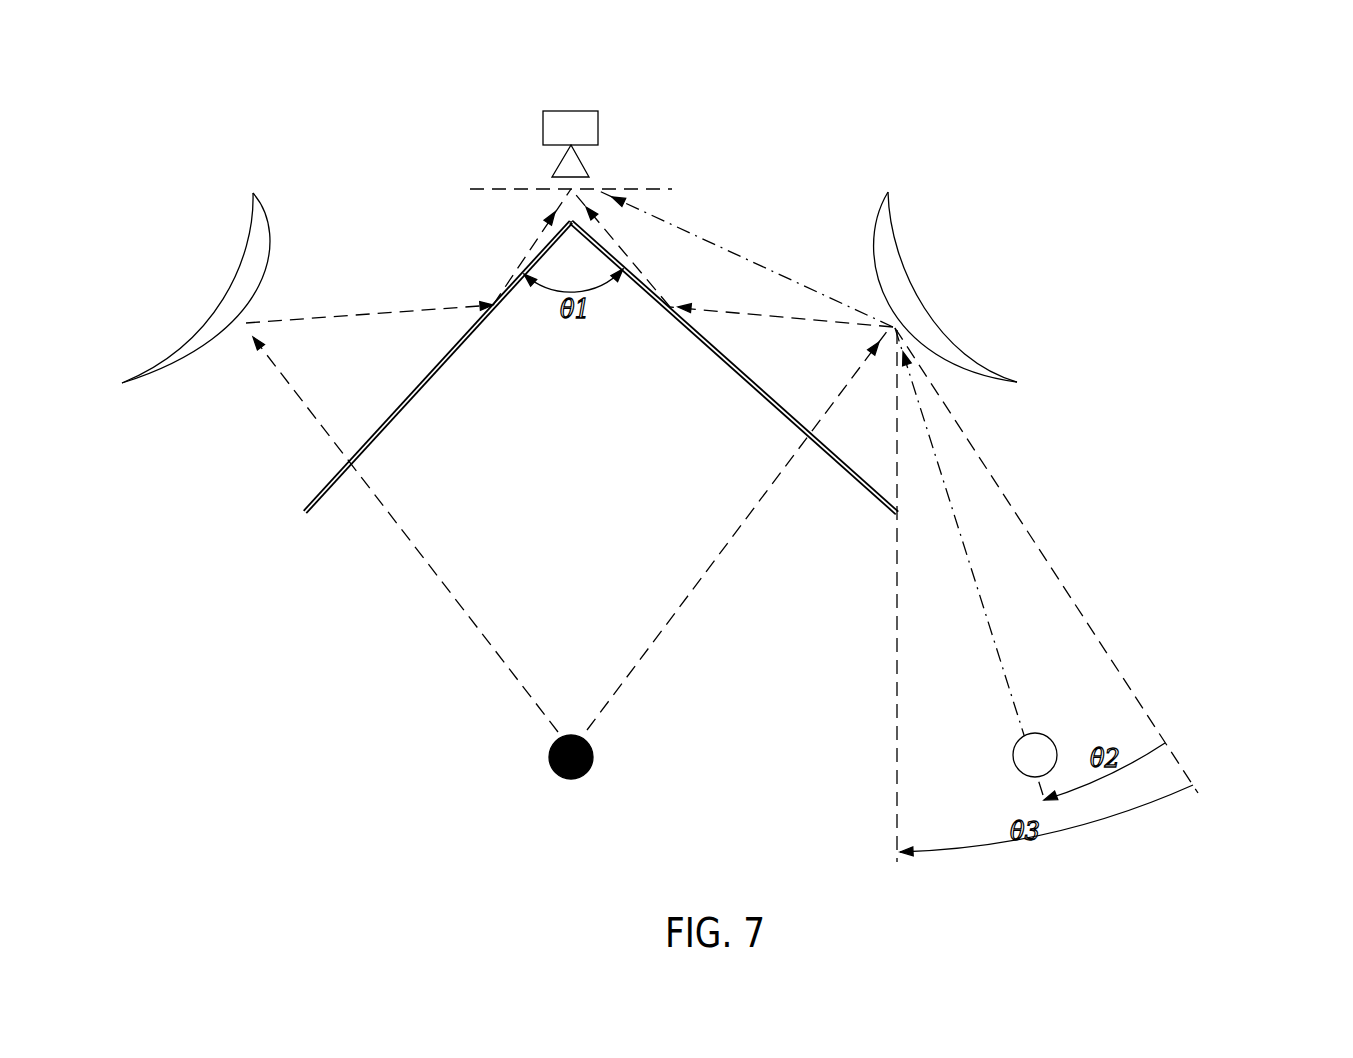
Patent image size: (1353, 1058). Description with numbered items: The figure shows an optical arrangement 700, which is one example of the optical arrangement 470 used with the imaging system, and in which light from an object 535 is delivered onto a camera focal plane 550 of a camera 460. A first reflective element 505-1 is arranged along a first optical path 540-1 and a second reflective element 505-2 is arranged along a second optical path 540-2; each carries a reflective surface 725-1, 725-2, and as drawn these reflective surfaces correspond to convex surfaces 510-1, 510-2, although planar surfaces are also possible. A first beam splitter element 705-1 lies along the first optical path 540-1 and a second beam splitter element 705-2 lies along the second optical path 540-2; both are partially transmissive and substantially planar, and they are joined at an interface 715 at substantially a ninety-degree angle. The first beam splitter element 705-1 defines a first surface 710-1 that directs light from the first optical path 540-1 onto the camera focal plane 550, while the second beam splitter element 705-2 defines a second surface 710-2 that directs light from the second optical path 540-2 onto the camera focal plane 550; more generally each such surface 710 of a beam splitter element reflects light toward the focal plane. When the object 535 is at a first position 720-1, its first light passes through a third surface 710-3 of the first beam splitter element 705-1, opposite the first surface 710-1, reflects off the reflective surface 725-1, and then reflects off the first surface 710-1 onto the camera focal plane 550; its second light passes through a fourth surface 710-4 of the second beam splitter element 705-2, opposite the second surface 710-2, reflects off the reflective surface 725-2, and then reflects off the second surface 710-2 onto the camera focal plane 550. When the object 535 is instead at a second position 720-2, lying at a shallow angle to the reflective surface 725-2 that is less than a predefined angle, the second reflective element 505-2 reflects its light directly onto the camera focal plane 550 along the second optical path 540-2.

The optical arrangement 700 is at (1259, 67).
The optical arrangement 470 is at (1180, 88).
The camera 460 is at (598, 128).
The camera focal plane 550 is at (652, 189).
The interface 715 is at (562, 218).
The first beam splitter element 705-1 is at (371, 448).
The second beam splitter element 705-2 is at (858, 437).
The first surface 710-1 is at (307, 495).
The second surface 710-2 is at (856, 460).
The third surface 710-3 is at (322, 506).
The fourth surface 710-4 is at (776, 405).
The surface 710 is at (1035, 543).
The first reflective element 505-1 is at (258, 269).
The second reflective element 505-2 is at (899, 262).
The reflective surface 725-1 is at (287, 269).
The reflective surface 725-2 is at (859, 262).
The convex surface 510-1 is at (218, 178).
The convex surface 510-2 is at (950, 185).
The first optical path 540-1 is at (435, 573).
The second optical path 540-2 is at (667, 633).
The object 535 is at (942, 717).
The first position 720-1 is at (595, 760).
The second position 720-2 is at (1043, 734).